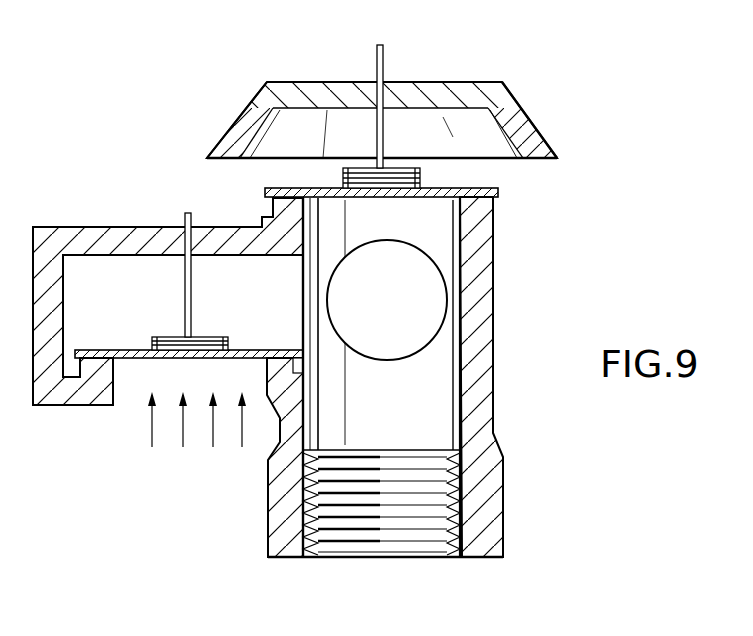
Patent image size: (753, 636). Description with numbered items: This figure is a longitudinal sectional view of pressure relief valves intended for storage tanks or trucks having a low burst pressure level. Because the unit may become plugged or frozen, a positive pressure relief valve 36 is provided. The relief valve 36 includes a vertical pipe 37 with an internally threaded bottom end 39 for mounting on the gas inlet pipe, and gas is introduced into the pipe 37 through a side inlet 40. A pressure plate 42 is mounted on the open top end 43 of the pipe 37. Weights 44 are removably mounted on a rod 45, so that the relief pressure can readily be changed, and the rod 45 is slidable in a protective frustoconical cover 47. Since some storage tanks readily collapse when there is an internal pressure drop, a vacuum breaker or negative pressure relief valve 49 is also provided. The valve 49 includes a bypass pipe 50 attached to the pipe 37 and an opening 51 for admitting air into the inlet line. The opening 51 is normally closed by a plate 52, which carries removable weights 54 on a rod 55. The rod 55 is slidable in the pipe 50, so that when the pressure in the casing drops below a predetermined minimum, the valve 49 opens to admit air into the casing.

The positive pressure relief valve 36 is at (560, 211).
The vertical pipe 37 is at (478, 370).
The internally threaded bottom end 39 is at (463, 502).
The side inlet 40 is at (448, 280).
The pressure plate 42 is at (498, 193).
The open top end 43 is at (458, 220).
The weights 44 is at (407, 166).
The rod 45 is at (385, 62).
The protective frustoconical cover 47 is at (523, 138).
The negative pressure relief valve 49 is at (128, 443).
The bypass pipe 50 is at (107, 230).
The opening 51 is at (110, 384).
The plate 52 is at (120, 350).
The removable weights 54 is at (228, 337).
The rod 55 is at (184, 216).